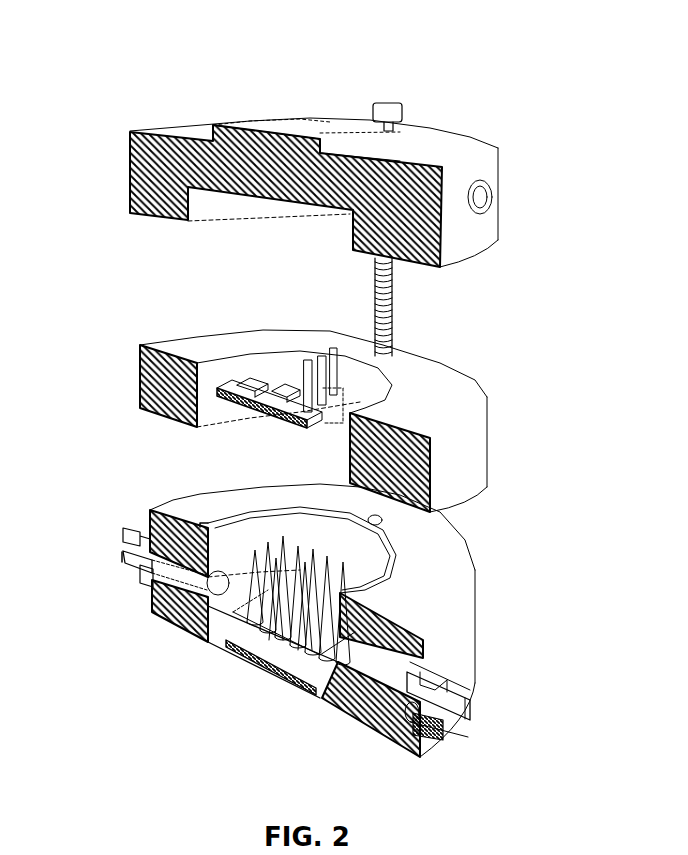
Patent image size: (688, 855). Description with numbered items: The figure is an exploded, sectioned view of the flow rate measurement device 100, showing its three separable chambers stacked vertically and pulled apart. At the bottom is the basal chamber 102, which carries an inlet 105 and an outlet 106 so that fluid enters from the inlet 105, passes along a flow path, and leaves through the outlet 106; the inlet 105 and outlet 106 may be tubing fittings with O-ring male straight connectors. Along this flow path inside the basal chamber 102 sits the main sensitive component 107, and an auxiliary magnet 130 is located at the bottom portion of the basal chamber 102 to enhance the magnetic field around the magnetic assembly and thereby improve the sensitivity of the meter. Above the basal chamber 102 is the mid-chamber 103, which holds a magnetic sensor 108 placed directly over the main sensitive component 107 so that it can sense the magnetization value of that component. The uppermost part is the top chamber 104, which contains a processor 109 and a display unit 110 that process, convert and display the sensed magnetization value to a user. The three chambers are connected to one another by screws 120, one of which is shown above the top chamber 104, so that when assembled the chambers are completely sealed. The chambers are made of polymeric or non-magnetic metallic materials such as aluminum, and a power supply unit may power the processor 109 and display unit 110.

The flow rate measurement device 100 is at (499, 52).
The basal chamber 102 is at (452, 638).
The mid-chamber 103 is at (450, 450).
The top chamber 104 is at (470, 223).
The inlet 105 is at (477, 717).
The outlet 106 is at (124, 552).
The main sensitive component 107 is at (215, 635).
The magnetic sensor 108 is at (290, 377).
The processor 109 is at (243, 122).
The display unit 110 is at (318, 128).
The screws 120 is at (392, 100).
The auxiliary magnet 130 is at (290, 678).